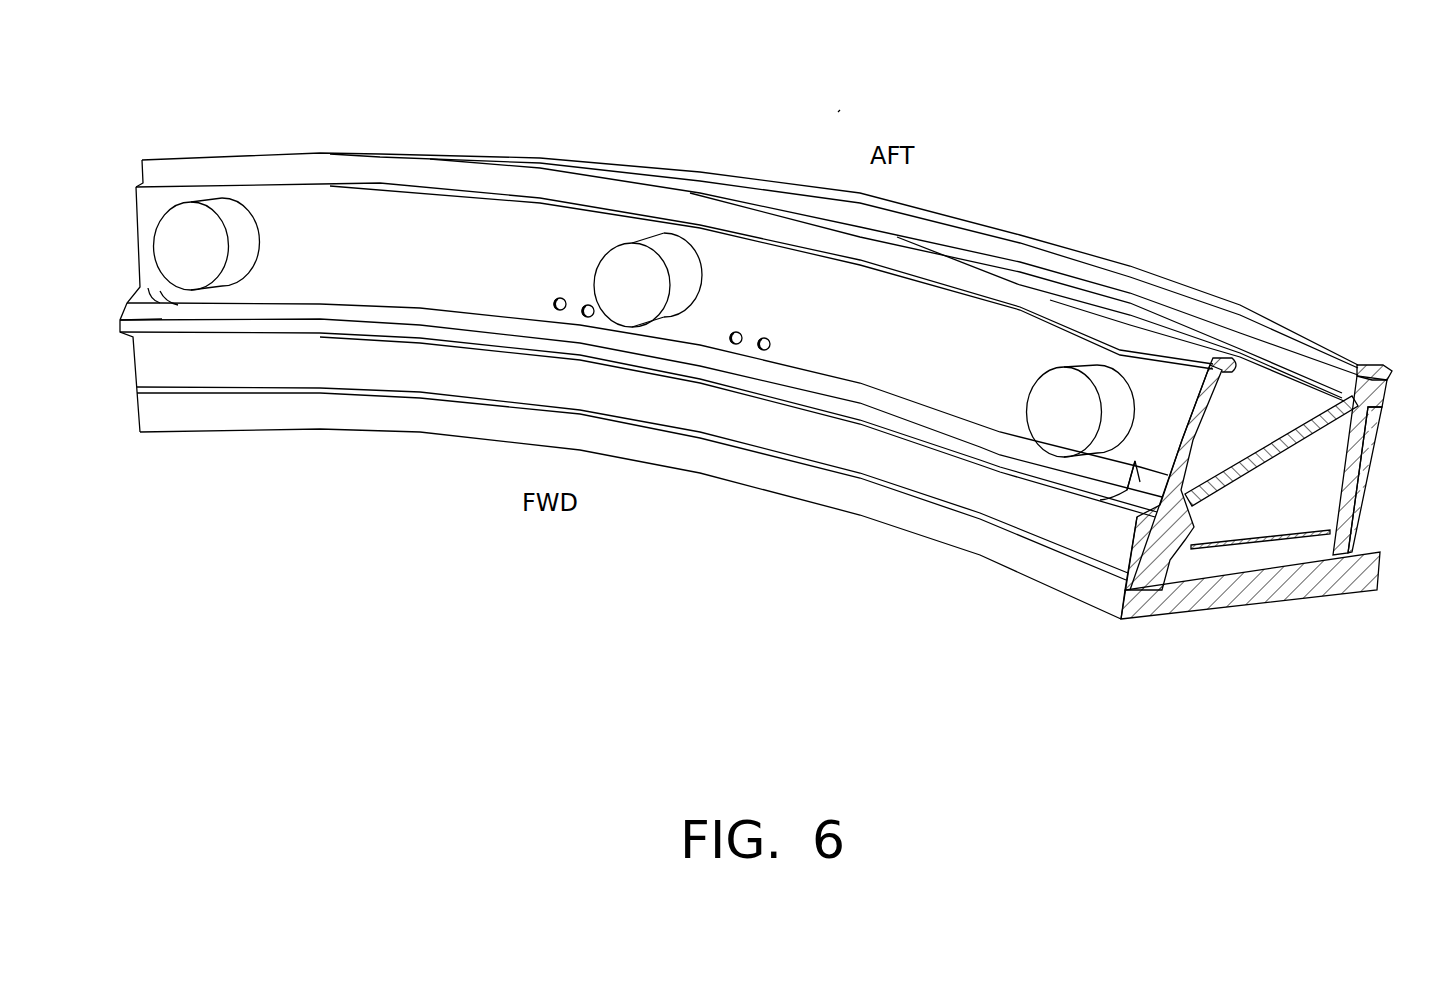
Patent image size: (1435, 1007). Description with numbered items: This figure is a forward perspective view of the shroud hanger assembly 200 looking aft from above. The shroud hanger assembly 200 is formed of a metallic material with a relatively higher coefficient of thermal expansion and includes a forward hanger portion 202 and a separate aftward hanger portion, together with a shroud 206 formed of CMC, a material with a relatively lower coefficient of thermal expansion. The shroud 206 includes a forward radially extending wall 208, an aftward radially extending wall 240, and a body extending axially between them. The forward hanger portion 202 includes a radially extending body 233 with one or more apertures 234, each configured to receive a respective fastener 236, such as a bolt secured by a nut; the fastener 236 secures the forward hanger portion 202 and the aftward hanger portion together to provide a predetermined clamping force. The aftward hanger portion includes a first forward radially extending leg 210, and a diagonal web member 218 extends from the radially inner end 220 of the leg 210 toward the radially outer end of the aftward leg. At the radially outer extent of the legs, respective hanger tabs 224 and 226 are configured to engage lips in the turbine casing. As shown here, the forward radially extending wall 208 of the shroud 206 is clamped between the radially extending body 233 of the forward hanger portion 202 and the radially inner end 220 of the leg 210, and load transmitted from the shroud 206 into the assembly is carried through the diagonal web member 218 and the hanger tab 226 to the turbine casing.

The shroud hanger assembly 200 is at (836, 108).
The forward hanger portion 202 is at (1112, 550).
The shroud 206 is at (1310, 590).
The forward radially extending wall 208 is at (1194, 550).
The first forward radially extending leg 210 is at (1210, 467).
The diagonal web member 218 is at (1280, 427).
The radially inner end 220 is at (1197, 553).
The hanger tab 224 is at (1233, 372).
The hanger tab 226 is at (1387, 362).
The radially extending body 233 is at (1180, 459).
The apertures 234 is at (255, 218).
The fastener 236 is at (193, 248).
The aftward radially extending wall 240 is at (1350, 512).